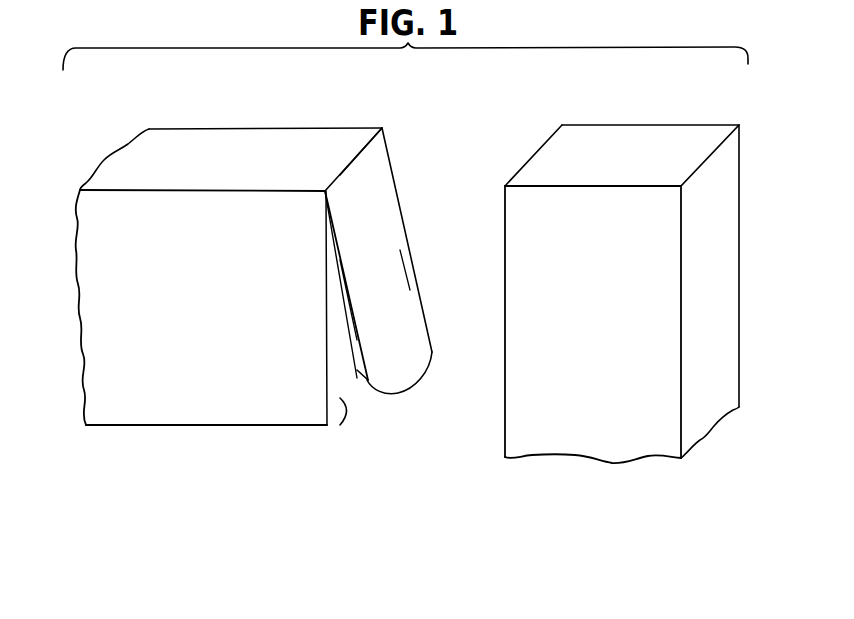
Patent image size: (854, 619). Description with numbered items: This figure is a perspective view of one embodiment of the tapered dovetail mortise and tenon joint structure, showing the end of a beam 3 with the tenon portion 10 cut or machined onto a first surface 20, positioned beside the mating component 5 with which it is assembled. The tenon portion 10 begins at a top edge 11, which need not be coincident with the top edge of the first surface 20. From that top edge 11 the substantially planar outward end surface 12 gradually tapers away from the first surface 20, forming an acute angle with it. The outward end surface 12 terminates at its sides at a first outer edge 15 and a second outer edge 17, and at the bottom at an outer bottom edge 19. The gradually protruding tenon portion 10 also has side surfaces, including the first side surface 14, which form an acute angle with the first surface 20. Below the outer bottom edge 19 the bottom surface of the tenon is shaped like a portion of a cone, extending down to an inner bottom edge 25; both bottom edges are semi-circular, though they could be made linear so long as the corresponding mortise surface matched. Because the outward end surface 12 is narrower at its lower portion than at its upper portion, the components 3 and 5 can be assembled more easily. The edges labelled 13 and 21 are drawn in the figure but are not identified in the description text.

The beam 3 is at (229, 245).
The component 5 is at (622, 253).
The tenon portion 10 is at (355, 321).
The top edge 11 is at (358, 126).
The outward end surface 12 is at (424, 280).
The workpiece corner edge 13 is at (326, 139).
The first side surface 14 is at (304, 314).
The first outer edge 15 is at (301, 284).
The second outer edge 17 is at (427, 240).
The outer bottom edge 19 is at (409, 396).
The first surface 20 is at (318, 425).
The cutting edge 21 is at (303, 285).
The inner bottom edge 25 is at (383, 405).